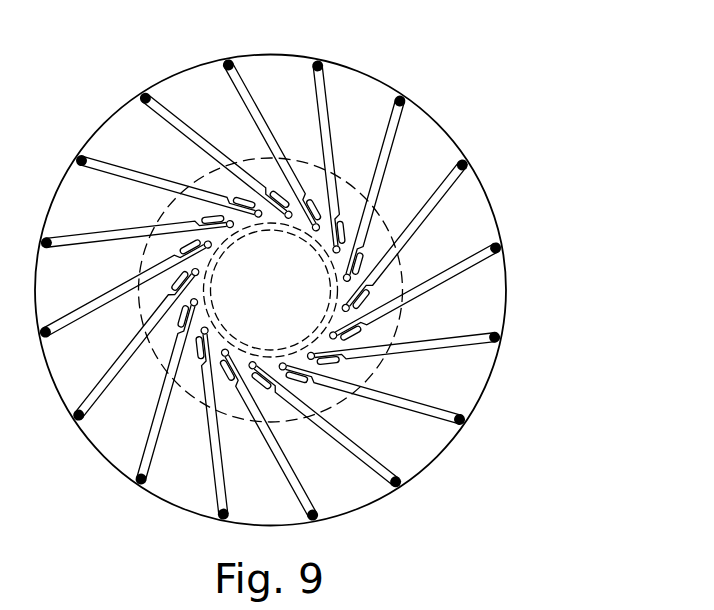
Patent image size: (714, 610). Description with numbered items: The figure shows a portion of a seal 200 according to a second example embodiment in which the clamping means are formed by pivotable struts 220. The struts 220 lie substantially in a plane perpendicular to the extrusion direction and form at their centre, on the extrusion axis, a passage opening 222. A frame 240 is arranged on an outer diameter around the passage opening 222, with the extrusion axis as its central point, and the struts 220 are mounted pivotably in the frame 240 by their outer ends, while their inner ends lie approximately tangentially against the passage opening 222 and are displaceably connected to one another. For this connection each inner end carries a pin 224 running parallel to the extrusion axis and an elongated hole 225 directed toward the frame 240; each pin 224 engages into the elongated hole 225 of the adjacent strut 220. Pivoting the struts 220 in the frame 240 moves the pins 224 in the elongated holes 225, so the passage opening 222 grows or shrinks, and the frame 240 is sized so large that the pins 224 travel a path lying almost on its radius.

The seal 200 is at (405, 77).
The strut 220 is at (436, 198).
The passage opening 222 is at (298, 260).
The pin 224 is at (360, 268).
The elongated hole 225 is at (342, 374).
The frame 240 is at (446, 450).